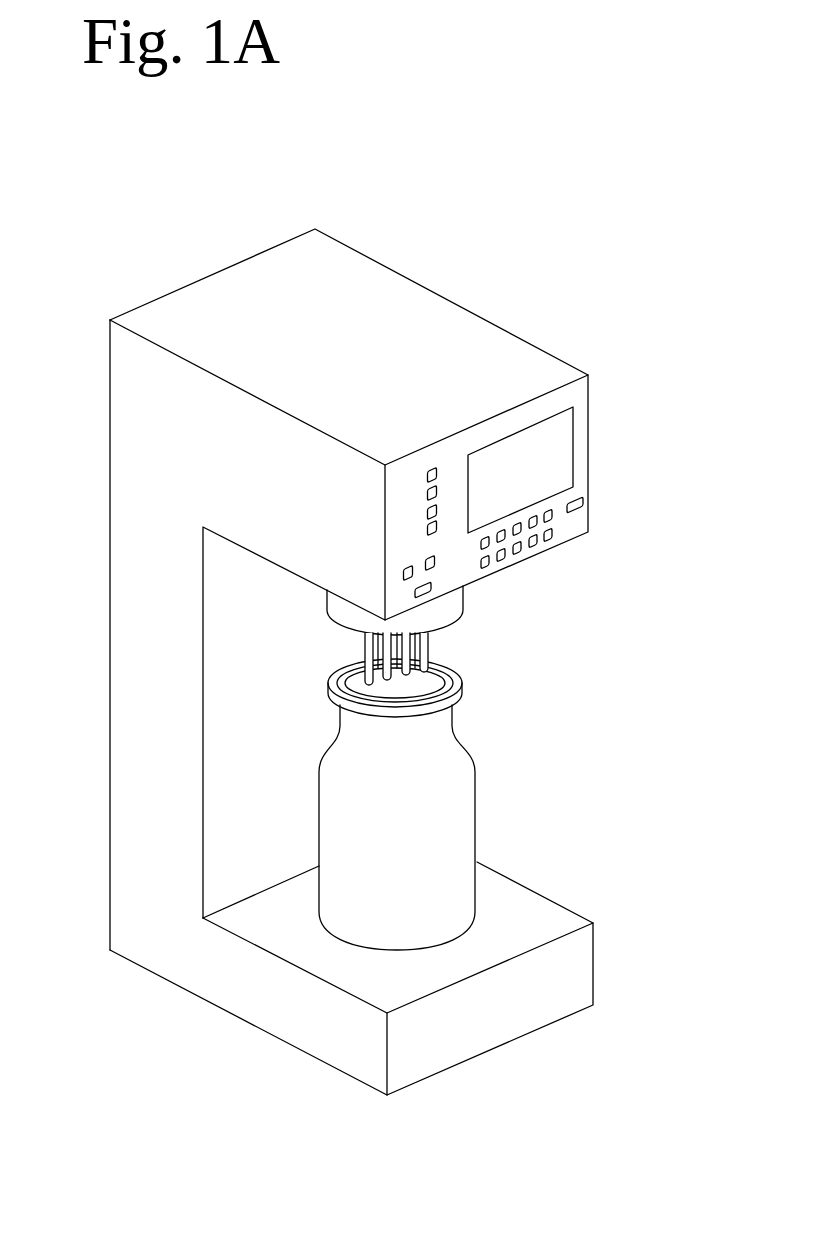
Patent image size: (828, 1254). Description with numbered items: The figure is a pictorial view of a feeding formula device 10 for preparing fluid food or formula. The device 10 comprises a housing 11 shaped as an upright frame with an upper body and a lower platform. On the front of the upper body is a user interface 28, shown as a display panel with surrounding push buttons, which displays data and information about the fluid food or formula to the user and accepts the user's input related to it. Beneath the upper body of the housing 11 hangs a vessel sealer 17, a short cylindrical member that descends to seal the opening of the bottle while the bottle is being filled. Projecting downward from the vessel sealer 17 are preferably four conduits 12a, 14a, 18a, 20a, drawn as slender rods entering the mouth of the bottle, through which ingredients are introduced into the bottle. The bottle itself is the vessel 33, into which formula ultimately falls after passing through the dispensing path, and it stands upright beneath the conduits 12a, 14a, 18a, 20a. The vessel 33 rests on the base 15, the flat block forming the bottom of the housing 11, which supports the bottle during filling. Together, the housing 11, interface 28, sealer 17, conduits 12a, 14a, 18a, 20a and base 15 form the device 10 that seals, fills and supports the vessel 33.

The feeding formula device 10 is at (340, 186).
The housing 11 is at (492, 345).
The user interface 28 is at (580, 443).
The vessel sealer 17 is at (448, 612).
The conduit 12a is at (375, 695).
The conduit 14a is at (388, 687).
The conduit 18a is at (380, 693).
The conduit 20a is at (342, 710).
The vessel 33 is at (463, 838).
The base 15 is at (527, 937).